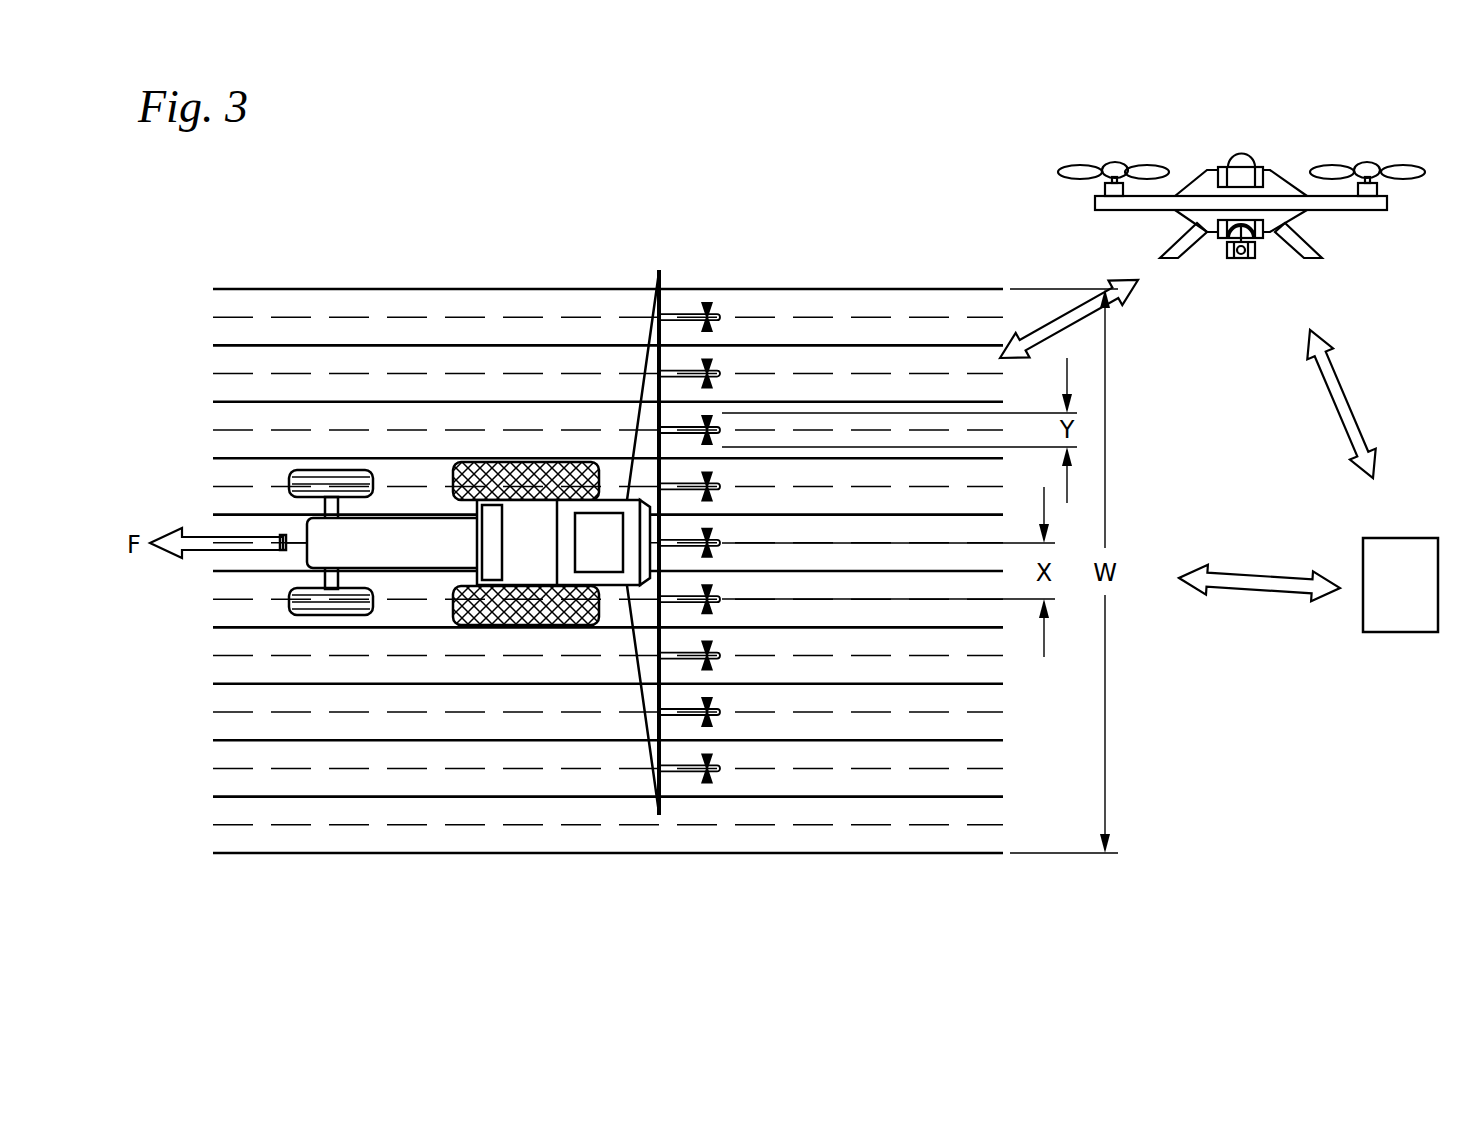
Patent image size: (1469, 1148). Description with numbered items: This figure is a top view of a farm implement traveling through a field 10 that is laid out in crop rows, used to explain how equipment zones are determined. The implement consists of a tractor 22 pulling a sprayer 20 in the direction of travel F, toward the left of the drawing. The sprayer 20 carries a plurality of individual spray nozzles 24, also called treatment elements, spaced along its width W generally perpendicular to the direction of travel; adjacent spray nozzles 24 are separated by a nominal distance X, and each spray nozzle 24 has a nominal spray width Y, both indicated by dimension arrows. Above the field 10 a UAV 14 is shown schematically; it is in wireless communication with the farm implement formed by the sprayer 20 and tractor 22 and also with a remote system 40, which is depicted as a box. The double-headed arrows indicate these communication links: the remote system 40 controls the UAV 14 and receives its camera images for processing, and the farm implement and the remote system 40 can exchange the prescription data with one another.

The field 10 is at (490, 268).
The UAV 14 is at (1273, 170).
The sprayer 20 is at (643, 752).
The tractor 22 is at (305, 517).
The spray nozzles 24 is at (722, 317).
The remote system 40 is at (1400, 635).